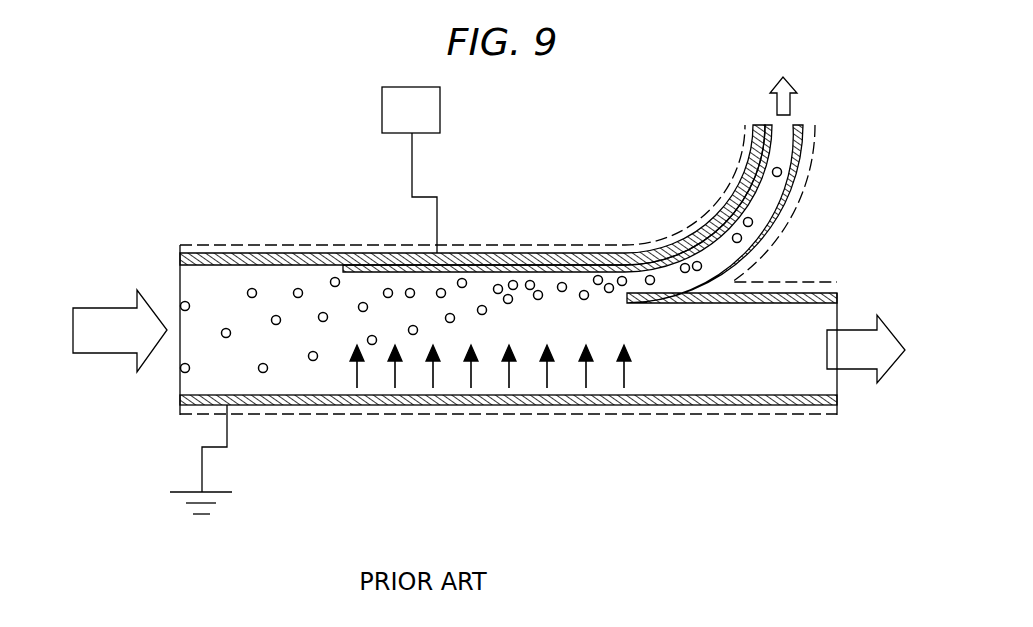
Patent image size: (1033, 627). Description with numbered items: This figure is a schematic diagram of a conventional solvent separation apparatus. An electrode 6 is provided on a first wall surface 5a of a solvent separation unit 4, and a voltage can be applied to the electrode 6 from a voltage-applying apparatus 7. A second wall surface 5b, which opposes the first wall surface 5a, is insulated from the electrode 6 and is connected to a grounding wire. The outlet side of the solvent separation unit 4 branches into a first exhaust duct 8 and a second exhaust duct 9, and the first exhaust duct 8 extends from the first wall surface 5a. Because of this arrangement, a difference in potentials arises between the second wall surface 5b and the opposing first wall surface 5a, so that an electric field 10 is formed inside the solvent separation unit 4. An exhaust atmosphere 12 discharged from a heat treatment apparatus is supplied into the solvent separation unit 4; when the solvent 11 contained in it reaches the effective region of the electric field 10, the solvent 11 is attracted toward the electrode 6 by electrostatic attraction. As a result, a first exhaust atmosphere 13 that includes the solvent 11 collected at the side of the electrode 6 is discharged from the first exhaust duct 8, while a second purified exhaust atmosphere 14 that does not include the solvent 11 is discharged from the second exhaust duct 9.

The solvent separation unit 4 is at (412, 224).
The first wall surface 5a is at (567, 272).
The second wall surface 5b is at (515, 406).
The electrode 6 is at (500, 262).
The voltage-applying apparatus 7 is at (440, 108).
The first exhaust duct 8 is at (798, 172).
The second exhaust duct 9 is at (753, 408).
The electric field 10 is at (433, 383).
The solvent 11 is at (384, 289).
The exhaust atmosphere 12 is at (100, 322).
The first exhaust atmosphere 13 is at (793, 110).
The second purified exhaust atmosphere 14 is at (860, 372).